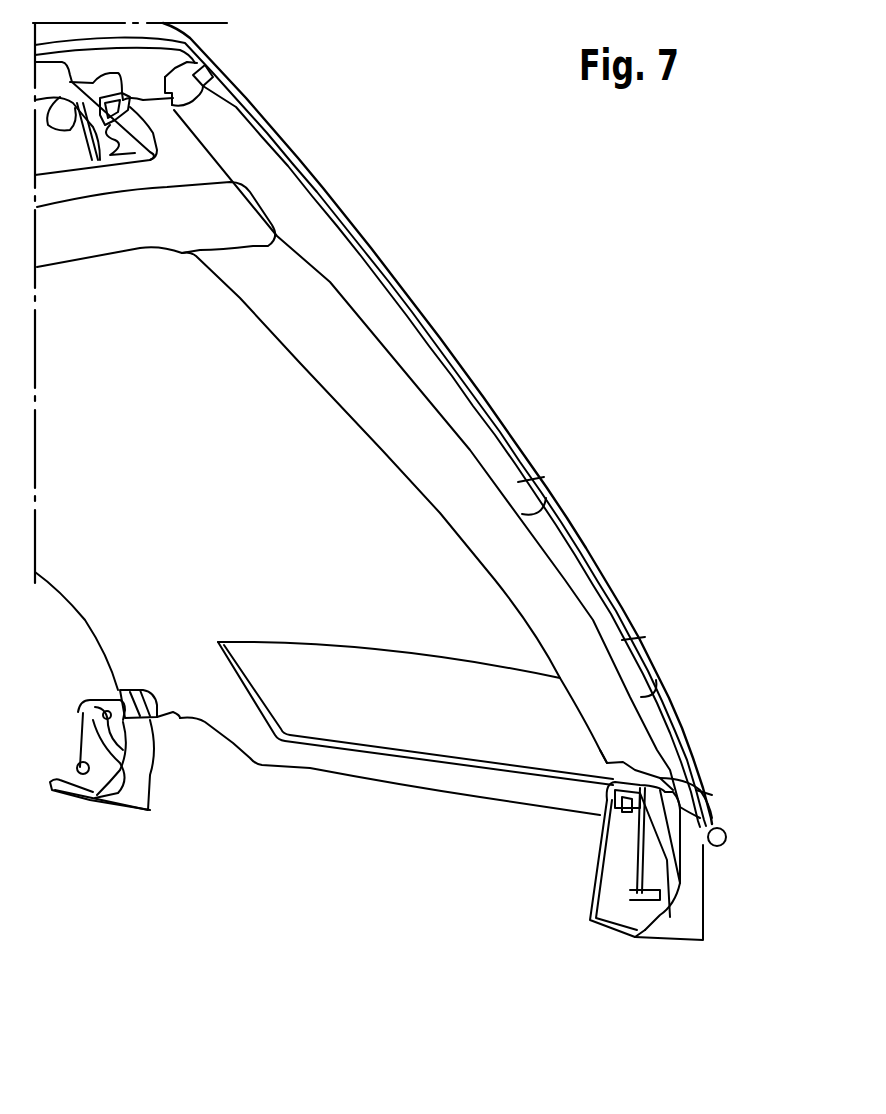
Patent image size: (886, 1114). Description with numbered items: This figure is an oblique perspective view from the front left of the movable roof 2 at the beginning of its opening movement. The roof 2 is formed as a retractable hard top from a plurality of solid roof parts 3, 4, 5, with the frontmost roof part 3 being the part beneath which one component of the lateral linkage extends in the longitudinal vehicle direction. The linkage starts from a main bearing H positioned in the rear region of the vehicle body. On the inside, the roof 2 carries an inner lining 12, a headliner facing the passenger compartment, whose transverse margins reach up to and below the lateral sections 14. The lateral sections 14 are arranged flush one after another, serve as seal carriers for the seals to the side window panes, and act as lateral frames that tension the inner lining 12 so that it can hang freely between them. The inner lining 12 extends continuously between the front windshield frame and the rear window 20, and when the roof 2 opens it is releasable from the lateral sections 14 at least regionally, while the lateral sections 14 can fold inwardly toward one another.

The movable roof 2 is at (483, 310).
The roof part 3 is at (526, 394).
The roof part 4 is at (627, 547).
The roof part 5 is at (712, 706).
The inner lining 12 is at (276, 530).
The lateral sections 14 is at (518, 483).
The rear window 20 is at (447, 725).
The main bearing H is at (140, 772).